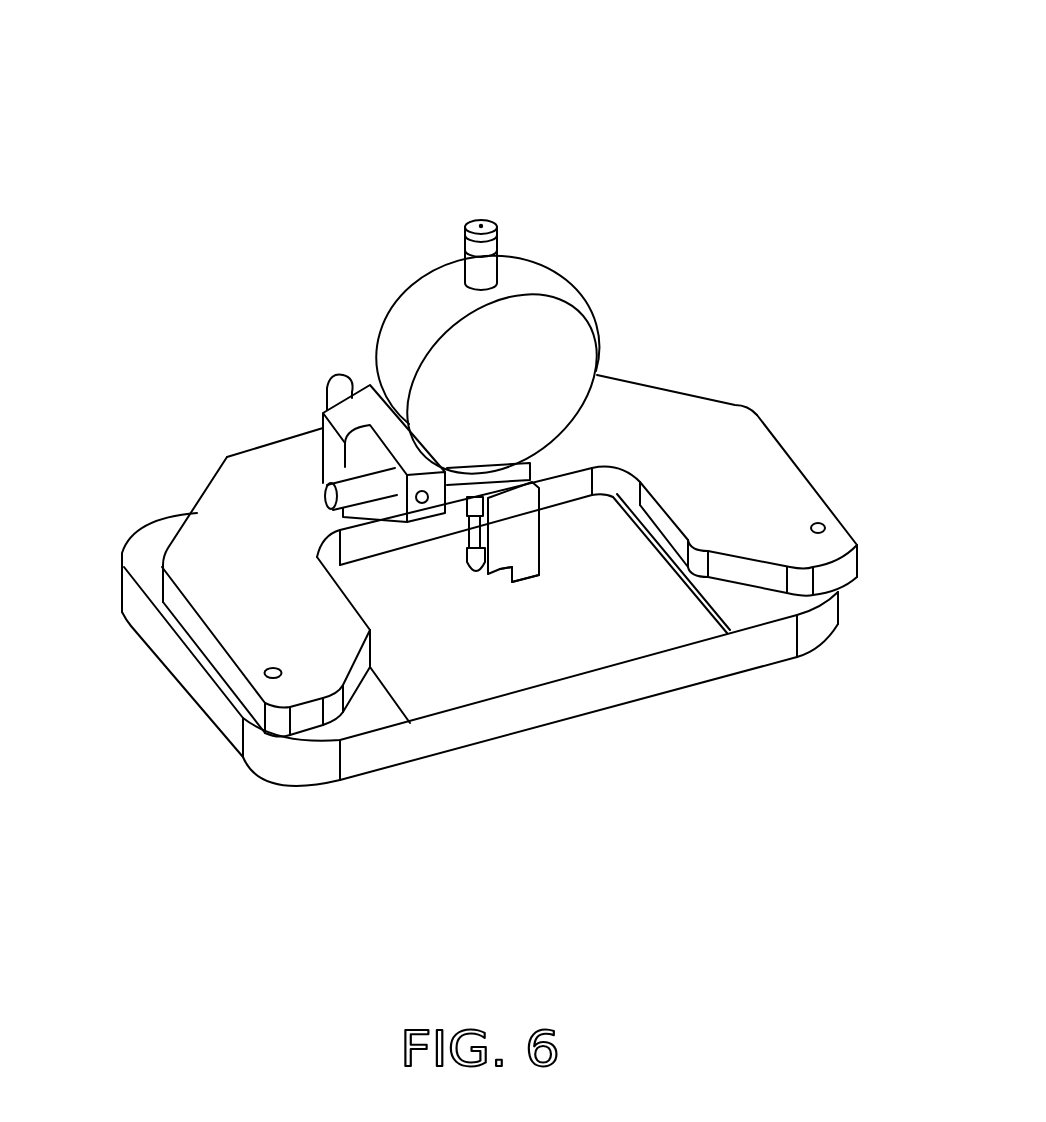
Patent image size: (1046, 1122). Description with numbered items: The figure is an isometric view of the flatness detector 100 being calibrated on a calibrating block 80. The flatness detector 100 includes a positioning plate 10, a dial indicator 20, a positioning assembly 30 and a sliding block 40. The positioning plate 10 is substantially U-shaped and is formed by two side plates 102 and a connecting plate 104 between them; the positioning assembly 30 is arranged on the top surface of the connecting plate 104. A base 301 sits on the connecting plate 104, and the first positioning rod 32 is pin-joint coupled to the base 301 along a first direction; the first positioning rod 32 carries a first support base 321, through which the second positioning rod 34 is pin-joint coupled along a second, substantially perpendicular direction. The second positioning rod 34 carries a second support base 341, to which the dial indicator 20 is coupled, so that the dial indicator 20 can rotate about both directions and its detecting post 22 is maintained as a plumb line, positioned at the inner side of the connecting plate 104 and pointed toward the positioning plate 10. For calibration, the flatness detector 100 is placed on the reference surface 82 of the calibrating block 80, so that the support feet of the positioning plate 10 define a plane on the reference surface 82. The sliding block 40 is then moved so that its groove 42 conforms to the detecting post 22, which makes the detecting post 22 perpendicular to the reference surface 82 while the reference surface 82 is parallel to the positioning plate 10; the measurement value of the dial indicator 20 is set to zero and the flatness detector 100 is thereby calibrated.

The flatness detector 100 is at (384, 38).
The positioning plate 10 is at (147, 528).
The dial indicator 20 is at (542, 290).
The detecting post 22 is at (473, 567).
The positioning assembly 30 is at (286, 382).
The first positioning rod 32 is at (340, 378).
The first support base 321 is at (392, 438).
The base 301 is at (338, 450).
The second positioning rod 34 is at (325, 497).
The second support base 341 is at (483, 483).
The sliding block 40 is at (533, 537).
The groove 42 is at (490, 574).
The calibrating block 80 is at (290, 762).
The reference surface 82 is at (432, 690).
The side plates 102 is at (247, 645).
The connecting plate 104 is at (283, 443).